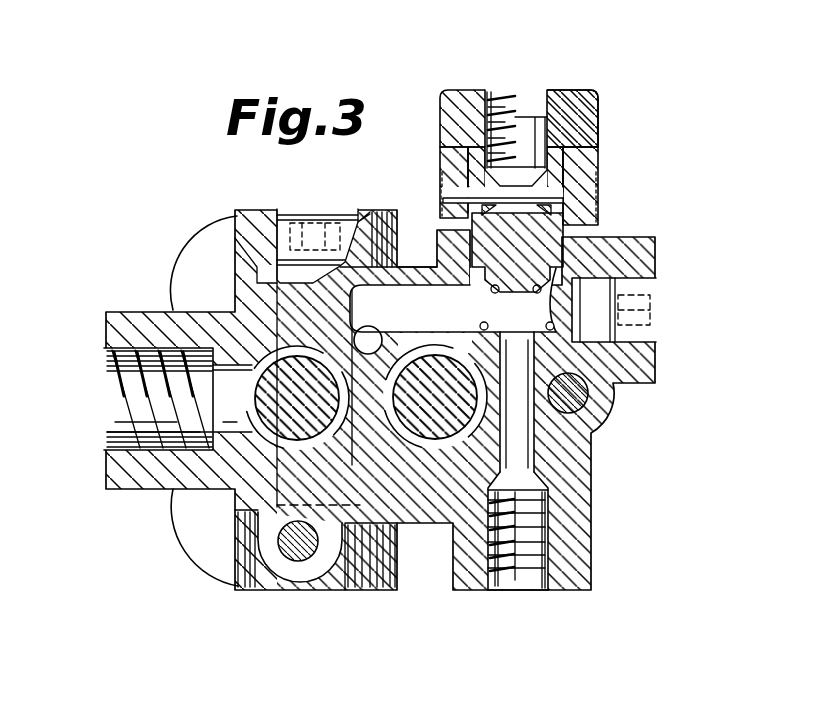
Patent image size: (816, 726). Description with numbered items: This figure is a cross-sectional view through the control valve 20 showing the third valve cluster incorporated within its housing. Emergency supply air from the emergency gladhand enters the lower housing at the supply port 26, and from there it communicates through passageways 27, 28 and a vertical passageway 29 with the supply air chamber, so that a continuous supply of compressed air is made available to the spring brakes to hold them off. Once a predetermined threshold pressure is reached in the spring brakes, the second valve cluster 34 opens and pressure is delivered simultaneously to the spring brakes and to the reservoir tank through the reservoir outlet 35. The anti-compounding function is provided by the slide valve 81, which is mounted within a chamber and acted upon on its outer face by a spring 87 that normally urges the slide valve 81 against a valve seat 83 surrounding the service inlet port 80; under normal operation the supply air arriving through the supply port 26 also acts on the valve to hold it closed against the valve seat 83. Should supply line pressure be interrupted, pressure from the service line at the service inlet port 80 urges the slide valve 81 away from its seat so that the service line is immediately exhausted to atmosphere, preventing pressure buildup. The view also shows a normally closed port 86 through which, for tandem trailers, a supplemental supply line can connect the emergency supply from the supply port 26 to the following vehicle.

The control valve 20 is at (178, 545).
The supply port 26 is at (513, 590).
The passageway 27 is at (527, 453).
The passageway 28 is at (462, 324).
The vertical passageway 29 is at (400, 316).
The second valve cluster 34 is at (301, 353).
The reservoir outlet 35 is at (122, 411).
The service inlet port 80 is at (527, 92).
The slide valve 81 is at (556, 232).
The valve seat 83 is at (583, 123).
The normally closed port 86 is at (637, 335).
The spring 87 is at (561, 303).